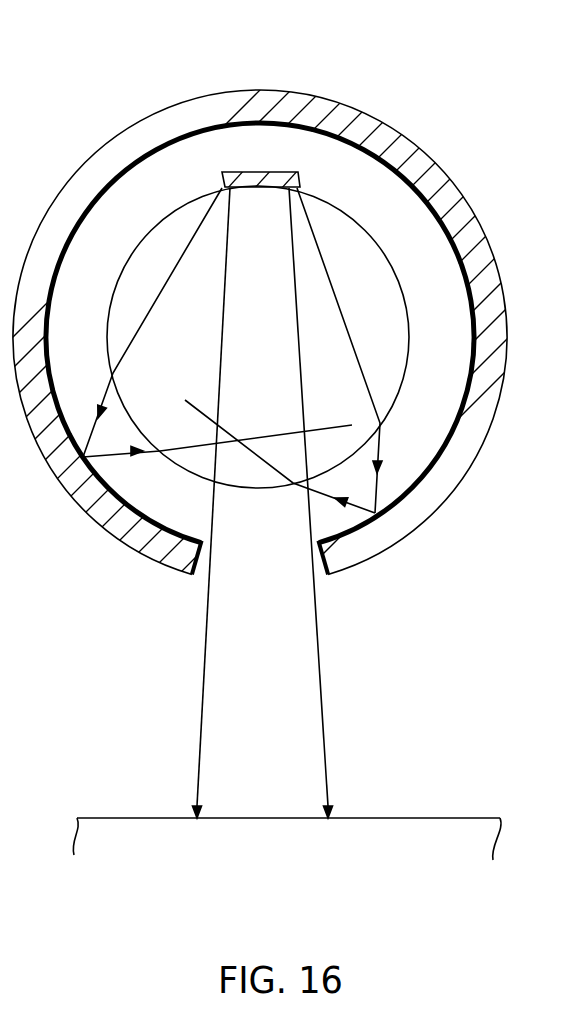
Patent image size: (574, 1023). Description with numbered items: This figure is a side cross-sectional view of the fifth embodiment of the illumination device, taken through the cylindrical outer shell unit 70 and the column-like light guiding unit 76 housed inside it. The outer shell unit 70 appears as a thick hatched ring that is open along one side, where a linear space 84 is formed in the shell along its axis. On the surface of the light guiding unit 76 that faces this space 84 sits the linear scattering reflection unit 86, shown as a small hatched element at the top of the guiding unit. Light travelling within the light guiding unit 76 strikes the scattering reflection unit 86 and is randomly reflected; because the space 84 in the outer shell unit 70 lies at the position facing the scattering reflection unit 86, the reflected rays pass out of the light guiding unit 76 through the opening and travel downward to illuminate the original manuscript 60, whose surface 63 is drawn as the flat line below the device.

The original manuscript 60 is at (294, 794).
The surface of object 63 is at (408, 818).
The cylindrical outer shell unit 70 is at (473, 393).
The column-like light guiding unit 76 is at (370, 257).
The linear space 84 is at (273, 555).
The linear scattering reflection unit 86 is at (265, 170).